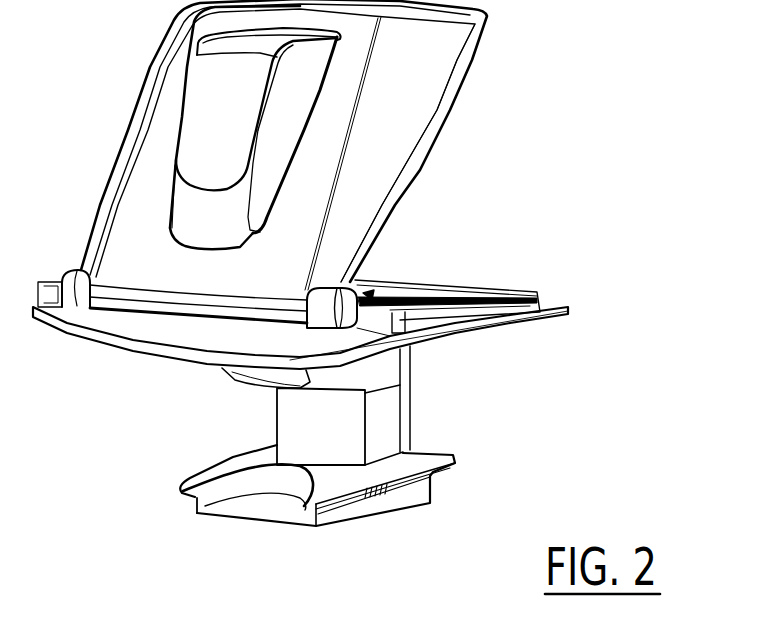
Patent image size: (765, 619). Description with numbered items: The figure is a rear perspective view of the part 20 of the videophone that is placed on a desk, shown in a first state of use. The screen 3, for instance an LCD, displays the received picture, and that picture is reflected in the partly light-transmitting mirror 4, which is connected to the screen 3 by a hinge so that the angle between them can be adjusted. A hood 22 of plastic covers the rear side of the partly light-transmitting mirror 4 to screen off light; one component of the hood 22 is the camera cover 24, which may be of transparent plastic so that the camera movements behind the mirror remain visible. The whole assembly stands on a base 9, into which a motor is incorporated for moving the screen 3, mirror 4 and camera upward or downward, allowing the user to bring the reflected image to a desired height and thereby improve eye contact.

The part of videophone 20 is at (495, 197).
The partly light-transmitting mirror 4 is at (478, 14).
The hood 22 is at (410, 122).
The camera cover 24 is at (205, 100).
The screen 3 is at (385, 282).
The base 9 is at (390, 422).